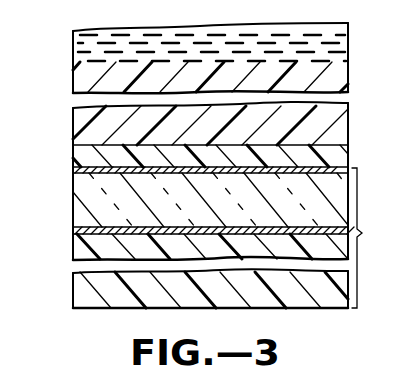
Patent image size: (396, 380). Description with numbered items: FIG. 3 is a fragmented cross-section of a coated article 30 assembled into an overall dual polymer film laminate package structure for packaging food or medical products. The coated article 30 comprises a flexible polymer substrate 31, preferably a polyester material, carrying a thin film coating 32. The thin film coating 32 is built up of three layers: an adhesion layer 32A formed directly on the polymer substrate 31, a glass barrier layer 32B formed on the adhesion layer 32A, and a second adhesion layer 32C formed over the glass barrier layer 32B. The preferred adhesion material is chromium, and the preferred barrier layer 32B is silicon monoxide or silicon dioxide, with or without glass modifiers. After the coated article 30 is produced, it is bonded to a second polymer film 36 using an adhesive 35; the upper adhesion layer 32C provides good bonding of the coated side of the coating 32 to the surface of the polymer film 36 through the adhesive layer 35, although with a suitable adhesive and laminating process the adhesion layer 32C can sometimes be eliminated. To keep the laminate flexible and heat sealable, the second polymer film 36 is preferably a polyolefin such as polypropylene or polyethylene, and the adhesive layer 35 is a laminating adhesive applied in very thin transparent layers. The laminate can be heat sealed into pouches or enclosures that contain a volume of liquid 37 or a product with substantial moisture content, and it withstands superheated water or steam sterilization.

The coated article 30 is at (391, 244).
The flexible polymer substrate 31 is at (82, 247).
The thin film coating 32 is at (188, 200).
The adhesion layer 32A is at (70, 232).
The glass barrier layer 32B is at (90, 202).
The second adhesion layer 32C is at (72, 172).
The adhesive layer 35 is at (80, 152).
The second polymer film 36 is at (87, 115).
The volume of liquid 37 is at (71, 37).